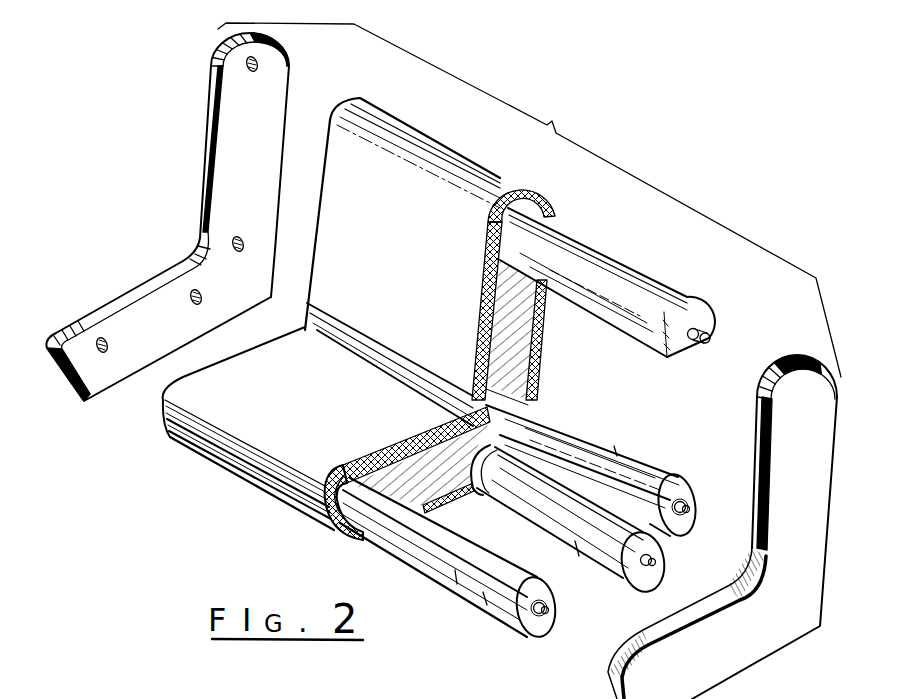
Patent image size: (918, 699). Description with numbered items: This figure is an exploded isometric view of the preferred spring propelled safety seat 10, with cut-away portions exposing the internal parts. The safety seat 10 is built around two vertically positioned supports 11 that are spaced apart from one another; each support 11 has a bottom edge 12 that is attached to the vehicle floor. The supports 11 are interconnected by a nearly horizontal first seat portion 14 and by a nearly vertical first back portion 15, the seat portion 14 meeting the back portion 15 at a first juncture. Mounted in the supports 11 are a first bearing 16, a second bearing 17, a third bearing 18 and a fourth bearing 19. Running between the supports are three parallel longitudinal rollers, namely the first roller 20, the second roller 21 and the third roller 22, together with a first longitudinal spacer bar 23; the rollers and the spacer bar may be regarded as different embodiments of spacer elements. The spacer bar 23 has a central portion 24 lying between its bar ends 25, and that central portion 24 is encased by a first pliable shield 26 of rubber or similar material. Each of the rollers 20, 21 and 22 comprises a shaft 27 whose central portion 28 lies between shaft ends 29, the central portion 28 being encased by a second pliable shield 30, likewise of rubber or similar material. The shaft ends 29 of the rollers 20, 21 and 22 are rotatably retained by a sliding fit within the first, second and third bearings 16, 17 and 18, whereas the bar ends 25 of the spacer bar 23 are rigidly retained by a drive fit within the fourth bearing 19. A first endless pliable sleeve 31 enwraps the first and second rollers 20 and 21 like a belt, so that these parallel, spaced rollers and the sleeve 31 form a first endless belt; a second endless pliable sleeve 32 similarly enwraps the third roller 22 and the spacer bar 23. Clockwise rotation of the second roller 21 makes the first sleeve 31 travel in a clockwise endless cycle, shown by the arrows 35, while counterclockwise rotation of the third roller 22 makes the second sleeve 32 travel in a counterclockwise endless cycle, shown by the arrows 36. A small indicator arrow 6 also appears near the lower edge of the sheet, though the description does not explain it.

The section view indicator 6 is at (227, 698).
The safety seat 10 is at (480, 172).
The vertically positioned supports 11 is at (212, 52).
The bottom edge 12 is at (147, 373).
The first seat portion 14 is at (166, 434).
The first back portion 15 is at (405, 124).
The first bearing 16 is at (102, 337).
The second bearing 17 is at (189, 298).
The third bearing 18 is at (236, 234).
The fourth bearing 19 is at (246, 68).
The first longitudinal roller 20 is at (417, 569).
The second longitudinal roller 21 is at (545, 526).
The third longitudinal roller 22 is at (597, 434).
The first longitudinal spacer bar 23 is at (613, 257).
The central portion 24 is at (597, 248).
The bar ends 25 is at (708, 338).
The first pliable shield 26 is at (653, 279).
The shaft 27 is at (546, 607).
The central portion 28 is at (457, 570).
The shaft ends 29 is at (548, 613).
The second pliable shield 30 is at (490, 608).
The first endless pliable sleeve 31 is at (242, 478).
The second endless pliable sleeve 32 is at (536, 372).
The arrows 35 is at (380, 424).
The arrows 36 is at (455, 312).